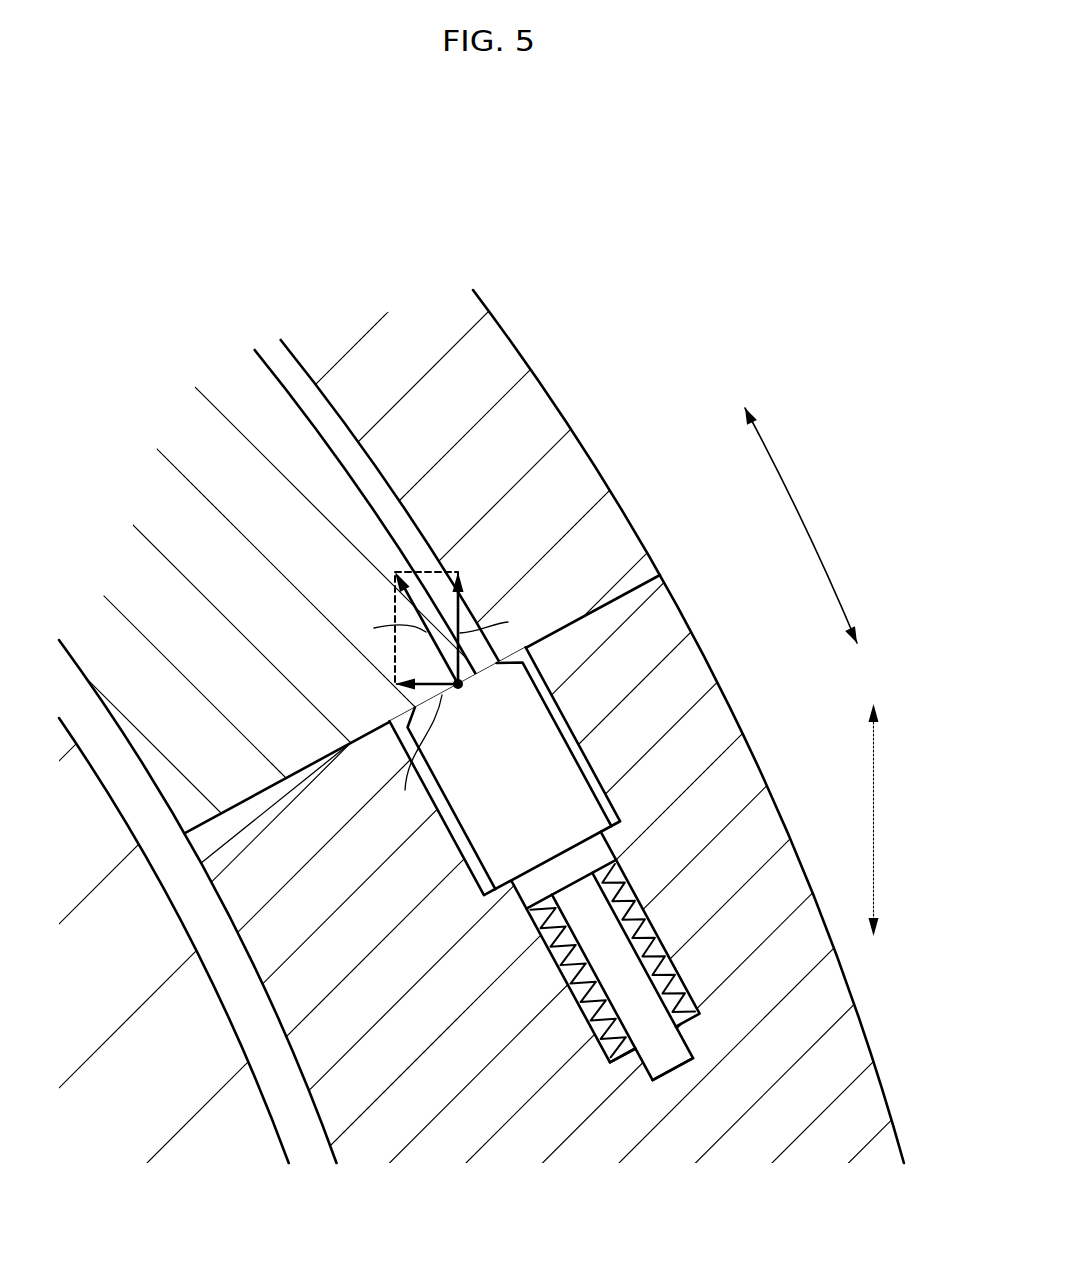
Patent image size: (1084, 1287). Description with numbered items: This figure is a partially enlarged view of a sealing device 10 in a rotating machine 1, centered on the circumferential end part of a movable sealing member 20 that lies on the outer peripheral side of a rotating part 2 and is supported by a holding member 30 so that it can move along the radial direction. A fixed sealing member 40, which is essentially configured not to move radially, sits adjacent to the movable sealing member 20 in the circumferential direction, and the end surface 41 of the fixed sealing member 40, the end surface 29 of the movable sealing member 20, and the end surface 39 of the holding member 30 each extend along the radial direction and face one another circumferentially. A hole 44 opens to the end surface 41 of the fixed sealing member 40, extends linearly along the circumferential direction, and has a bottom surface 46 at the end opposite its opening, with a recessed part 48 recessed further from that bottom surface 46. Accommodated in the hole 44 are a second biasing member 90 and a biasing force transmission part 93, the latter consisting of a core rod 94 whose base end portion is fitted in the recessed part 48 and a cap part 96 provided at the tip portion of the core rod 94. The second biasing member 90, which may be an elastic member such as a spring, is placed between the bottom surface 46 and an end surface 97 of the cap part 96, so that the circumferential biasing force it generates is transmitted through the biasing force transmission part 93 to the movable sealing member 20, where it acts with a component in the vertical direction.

The rotating machine 1 is at (740, 252).
The sealing device 10 is at (668, 347).
The rotating part 2 is at (113, 980).
The movable sealing member 20 is at (333, 500).
The holding member 30 is at (482, 358).
The fixed sealing member 40 is at (800, 1085).
The end surface of the holding member 39 is at (606, 622).
The end surface of the fixed sealing member 41 is at (250, 797).
The end surface of the movable sealing member 29 is at (235, 810).
The hole 44 is at (557, 713).
The cap part 96 is at (542, 773).
The biasing force transmission part 93 is at (617, 789).
The second biasing member 90 is at (657, 910).
The end surface of the cap part 97 is at (530, 912).
The core rod 94 is at (625, 968).
The recessed part 48 is at (673, 1066).
The bottom surface 46 is at (628, 1053).